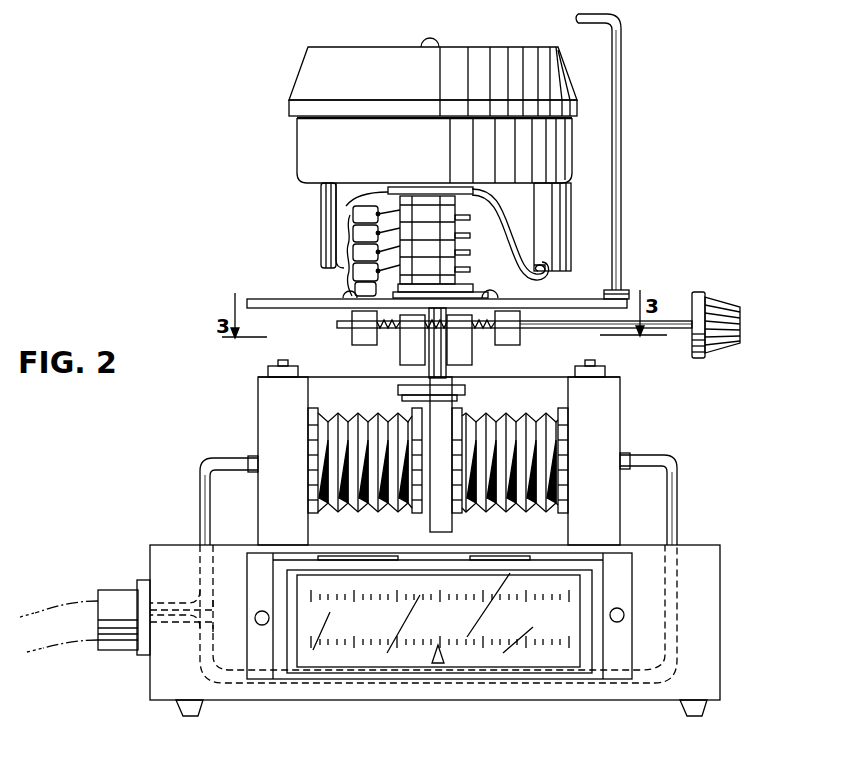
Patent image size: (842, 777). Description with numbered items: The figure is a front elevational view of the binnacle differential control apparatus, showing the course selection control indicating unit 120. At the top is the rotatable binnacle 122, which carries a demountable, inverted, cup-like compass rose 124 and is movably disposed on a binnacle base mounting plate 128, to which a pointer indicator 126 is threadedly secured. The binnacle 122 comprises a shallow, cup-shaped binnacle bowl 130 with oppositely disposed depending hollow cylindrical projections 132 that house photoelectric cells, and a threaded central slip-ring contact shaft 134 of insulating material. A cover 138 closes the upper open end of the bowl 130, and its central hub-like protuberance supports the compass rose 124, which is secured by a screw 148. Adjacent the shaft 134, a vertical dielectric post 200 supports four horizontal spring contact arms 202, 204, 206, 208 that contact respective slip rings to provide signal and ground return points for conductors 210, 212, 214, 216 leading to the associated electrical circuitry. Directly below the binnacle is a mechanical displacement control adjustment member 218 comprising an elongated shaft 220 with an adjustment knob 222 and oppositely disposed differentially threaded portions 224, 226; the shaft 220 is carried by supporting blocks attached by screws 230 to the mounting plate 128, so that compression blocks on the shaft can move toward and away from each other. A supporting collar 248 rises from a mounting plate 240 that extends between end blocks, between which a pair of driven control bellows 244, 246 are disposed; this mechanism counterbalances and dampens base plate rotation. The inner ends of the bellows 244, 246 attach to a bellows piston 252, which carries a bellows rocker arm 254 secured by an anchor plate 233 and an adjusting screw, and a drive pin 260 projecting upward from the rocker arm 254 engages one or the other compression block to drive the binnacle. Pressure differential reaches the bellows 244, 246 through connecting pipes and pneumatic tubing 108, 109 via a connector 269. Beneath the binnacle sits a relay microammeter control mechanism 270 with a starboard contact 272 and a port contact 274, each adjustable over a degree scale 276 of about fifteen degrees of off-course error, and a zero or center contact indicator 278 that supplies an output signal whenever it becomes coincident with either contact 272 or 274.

The pneumatic tubing 108 is at (678, 492).
The pneumatic tubing 109 is at (200, 492).
The course selection control indicating unit 120 is at (371, 94).
The binnacle 122 is at (288, 130).
The compass rose 124 is at (308, 60).
The pointer indicator 126 is at (623, 172).
The binnacle base mounting plate 128 is at (247, 304).
The binnacle bowl 130 is at (318, 150).
The hollow cylindrical projections 132 is at (573, 240).
The slip-ring contact shaft 134 is at (461, 248).
The cover 138 is at (579, 108).
The screw 148 is at (433, 40).
The dielectric post 200 is at (350, 201).
The spring contact arm 202 is at (392, 213).
The spring contact arm 204 is at (392, 233).
The spring contact arm 206 is at (392, 253).
The spring contact arm 208 is at (392, 273).
The conductor 210 is at (352, 213).
The conductor 212 is at (352, 231).
The conductor 214 is at (352, 249).
The conductor 216 is at (352, 267).
The mechanical displacement control adjustment member 218 is at (672, 283).
The elongated shaft 220 is at (337, 325).
The adjustment knob 222 is at (722, 300).
The differentially threaded portion 224 is at (528, 322).
The differentially threaded portion 226 is at (345, 300).
The screw 230 is at (510, 281).
The anchor plate 233 is at (403, 401).
The mounting plate 240 is at (436, 444).
The driven control bellows 244 is at (508, 414).
The driven control bellows 246 is at (372, 414).
The supporting collar 248 is at (441, 340).
The bellows piston 252 is at (430, 527).
The bellows rocker arm 254 is at (466, 390).
The drive pin 260 is at (429, 360).
The connector 269 is at (142, 583).
The relay microammeter control mechanism 270 is at (548, 719).
The starboard contact 272 is at (490, 588).
The port contact 274 is at (390, 588).
The degree scale 276 is at (340, 655).
The center contact indicator 278 is at (437, 665).